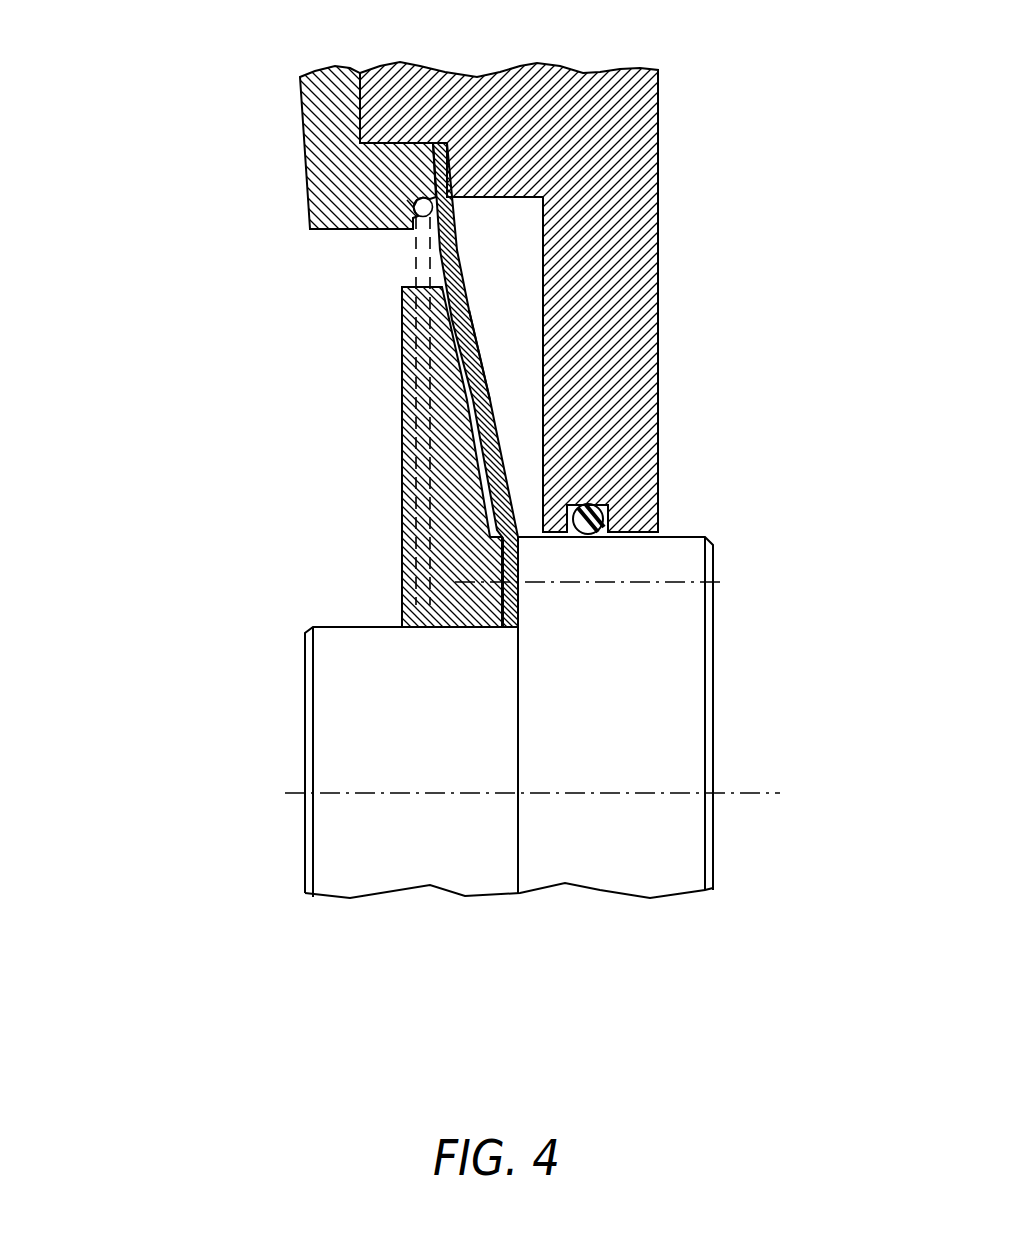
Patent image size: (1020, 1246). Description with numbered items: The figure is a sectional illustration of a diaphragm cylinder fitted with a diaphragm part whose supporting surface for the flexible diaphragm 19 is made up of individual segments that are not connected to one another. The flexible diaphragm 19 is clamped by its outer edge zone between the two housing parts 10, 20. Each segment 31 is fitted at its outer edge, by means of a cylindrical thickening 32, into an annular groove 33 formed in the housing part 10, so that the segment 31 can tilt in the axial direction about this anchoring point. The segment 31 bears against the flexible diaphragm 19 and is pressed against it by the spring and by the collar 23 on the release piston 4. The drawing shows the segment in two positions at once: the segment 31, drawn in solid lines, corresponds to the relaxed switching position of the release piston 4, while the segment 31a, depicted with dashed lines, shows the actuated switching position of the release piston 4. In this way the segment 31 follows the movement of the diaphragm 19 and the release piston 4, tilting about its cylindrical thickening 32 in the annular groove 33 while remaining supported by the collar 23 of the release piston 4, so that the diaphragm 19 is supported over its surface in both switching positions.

The release piston 4 is at (680, 608).
The housing part 10 is at (320, 135).
The flexible diaphragm 19 is at (490, 378).
The housing part 20 is at (620, 155).
The collar 23 is at (440, 555).
The segment 31 is at (457, 353).
The segment 31a is at (392, 388).
The cylindrical thickening 32 is at (414, 210).
The annular groove 33 is at (407, 200).